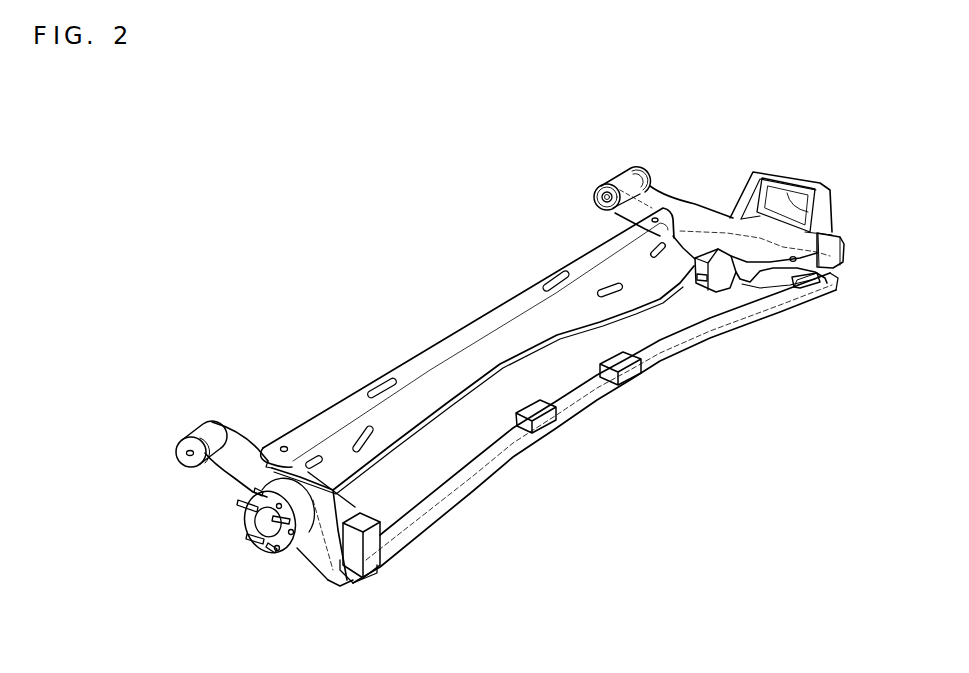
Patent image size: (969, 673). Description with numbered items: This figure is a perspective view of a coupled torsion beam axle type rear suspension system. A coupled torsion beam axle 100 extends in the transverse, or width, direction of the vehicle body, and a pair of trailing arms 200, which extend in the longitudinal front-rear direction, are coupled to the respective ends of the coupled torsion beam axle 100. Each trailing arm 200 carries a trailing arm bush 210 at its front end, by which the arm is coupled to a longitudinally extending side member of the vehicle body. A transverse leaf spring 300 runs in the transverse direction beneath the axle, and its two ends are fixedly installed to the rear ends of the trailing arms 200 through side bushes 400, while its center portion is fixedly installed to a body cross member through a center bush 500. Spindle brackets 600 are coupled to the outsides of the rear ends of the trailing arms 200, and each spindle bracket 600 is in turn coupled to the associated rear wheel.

The coupled torsion beam axle 100 is at (448, 353).
The trailing arm 200 is at (690, 218).
The trailing arm bush 210 is at (606, 176).
The transverse leaf spring 300 is at (473, 491).
The side bush 400 is at (790, 293).
The center bush 500 is at (632, 365).
The spindle bracket 600 is at (785, 168).